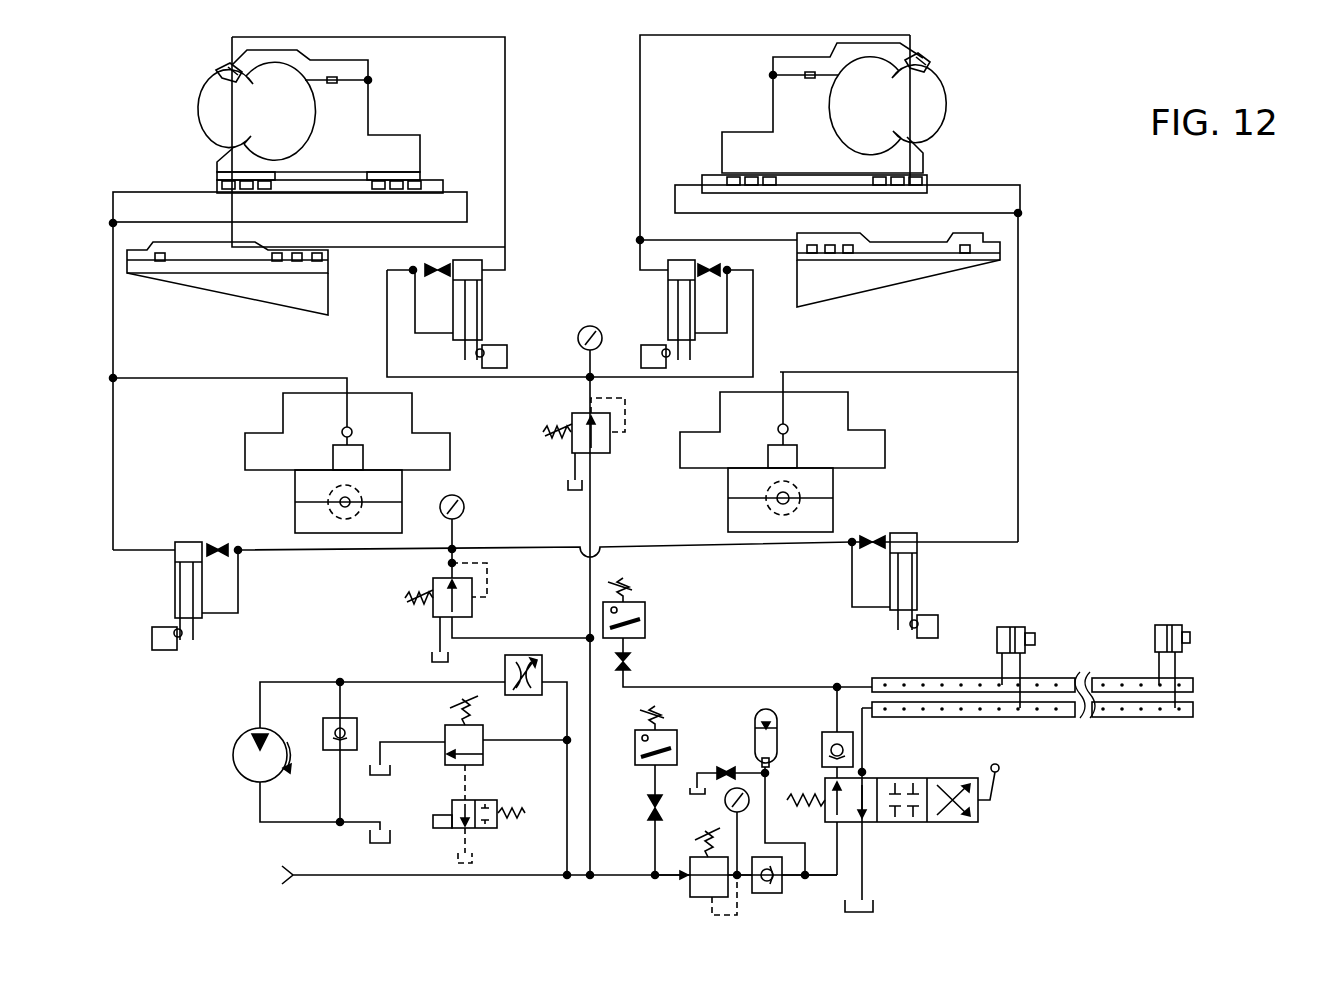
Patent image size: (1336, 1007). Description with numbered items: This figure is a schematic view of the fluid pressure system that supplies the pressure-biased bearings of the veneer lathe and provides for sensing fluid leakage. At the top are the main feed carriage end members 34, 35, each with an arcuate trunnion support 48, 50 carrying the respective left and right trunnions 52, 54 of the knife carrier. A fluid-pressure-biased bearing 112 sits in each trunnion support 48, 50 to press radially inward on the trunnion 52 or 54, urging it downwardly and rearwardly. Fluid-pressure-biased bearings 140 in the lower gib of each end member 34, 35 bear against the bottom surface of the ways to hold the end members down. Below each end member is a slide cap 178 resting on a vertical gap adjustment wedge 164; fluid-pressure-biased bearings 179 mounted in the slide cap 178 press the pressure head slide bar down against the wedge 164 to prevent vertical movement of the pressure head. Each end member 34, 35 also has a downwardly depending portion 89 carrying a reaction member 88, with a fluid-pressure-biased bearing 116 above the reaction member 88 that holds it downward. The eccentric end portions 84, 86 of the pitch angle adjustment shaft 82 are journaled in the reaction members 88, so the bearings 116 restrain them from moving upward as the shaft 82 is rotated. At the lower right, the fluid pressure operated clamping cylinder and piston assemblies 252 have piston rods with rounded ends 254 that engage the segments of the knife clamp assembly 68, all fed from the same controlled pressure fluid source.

The main feed carriage end member 34 is at (348, 151).
The main feed carriage end member 35 is at (813, 141).
The arcuate trunnion support 48 is at (296, 143).
The left trunnion 52 is at (288, 82).
The arcuate trunnion support 50 is at (838, 82).
The right trunnion 54 is at (840, 110).
The fluid-pressure-biased bearing 112 is at (226, 70).
The fluid-pressure-biased bearing 140 is at (262, 190).
The slide cap 178 is at (250, 250).
The fluid-pressure-biased bearing 179 is at (160, 262).
The vertical gap adjustment wedge 164 is at (240, 295).
The downwardly depending portion 89 is at (293, 412).
The fluid-pressure-biased bearing 116 is at (363, 452).
The reaction member 88 is at (305, 489).
The pitch angle adjustment shaft 82 is at (315, 515).
The eccentric end portion 84 is at (348, 508).
The eccentric end portion 86 is at (785, 504).
The clamping cylinder and piston assembly 252 is at (1003, 627).
The rounded end 254 is at (1032, 633).
The knife clamp assembly 68 is at (1195, 684).